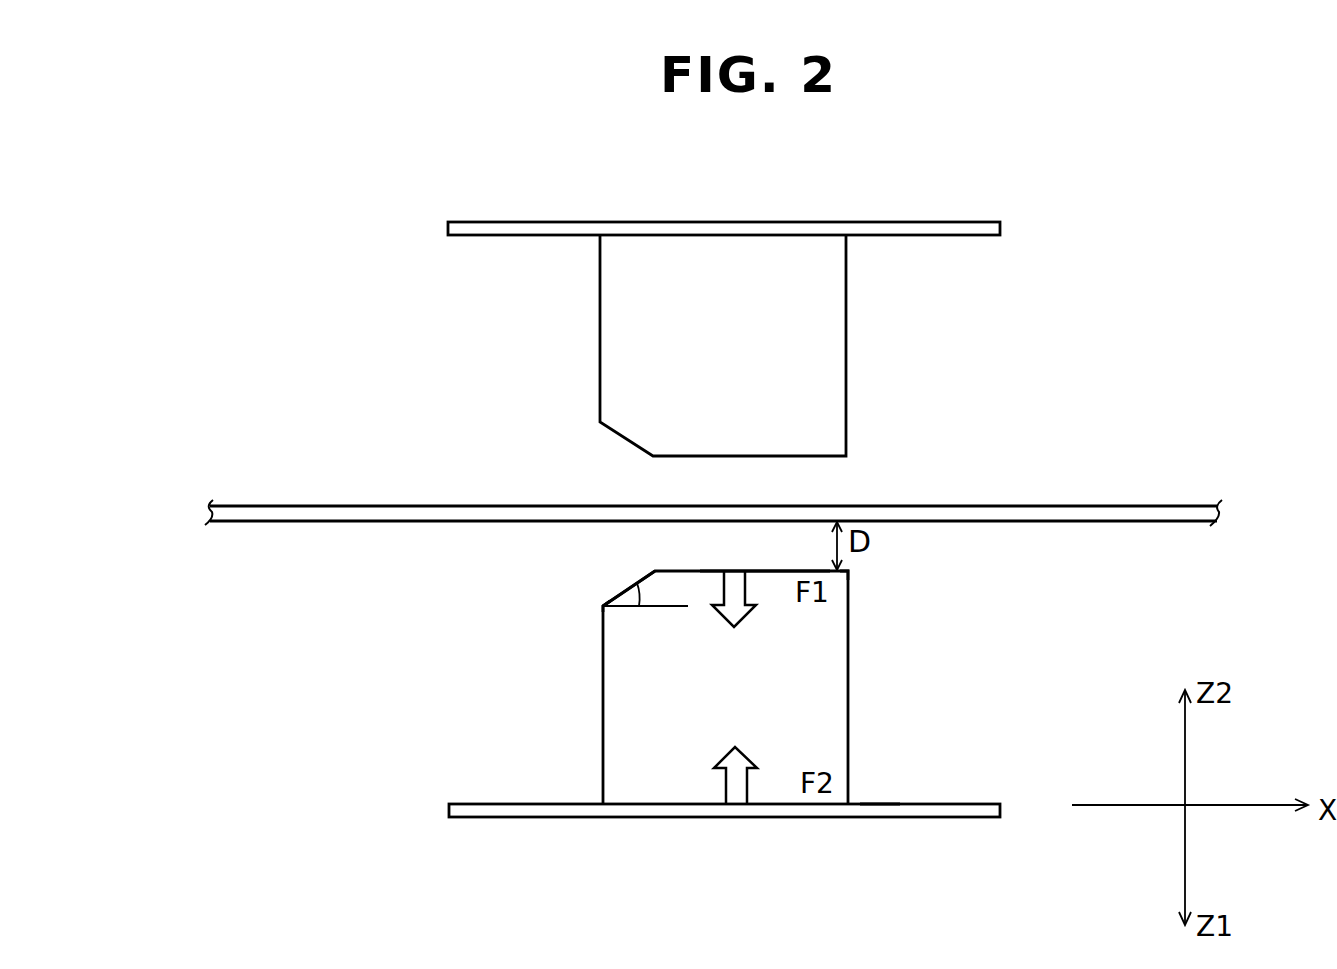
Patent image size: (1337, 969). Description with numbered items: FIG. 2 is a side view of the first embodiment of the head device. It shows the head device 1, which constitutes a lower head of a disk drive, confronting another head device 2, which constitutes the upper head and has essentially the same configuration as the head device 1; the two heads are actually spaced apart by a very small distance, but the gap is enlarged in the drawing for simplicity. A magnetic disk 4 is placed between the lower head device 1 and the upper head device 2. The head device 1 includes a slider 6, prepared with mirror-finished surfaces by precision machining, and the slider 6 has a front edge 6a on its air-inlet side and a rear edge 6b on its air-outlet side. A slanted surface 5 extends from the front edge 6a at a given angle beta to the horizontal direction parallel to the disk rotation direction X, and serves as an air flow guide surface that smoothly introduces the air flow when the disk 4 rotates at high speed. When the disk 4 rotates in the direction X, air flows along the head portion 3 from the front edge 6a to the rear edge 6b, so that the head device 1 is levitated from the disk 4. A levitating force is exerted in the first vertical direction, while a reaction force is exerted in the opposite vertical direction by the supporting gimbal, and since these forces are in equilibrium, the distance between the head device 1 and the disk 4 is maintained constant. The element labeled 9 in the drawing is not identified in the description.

The head device 1 is at (592, 706).
The head device 2 is at (596, 338).
The head portion 3 is at (763, 571).
The magnetic disk 4 is at (298, 510).
The slanted surface 5 is at (632, 590).
The slider 6 is at (647, 780).
The front edge 6a is at (603, 606).
The rear edge 6b is at (848, 571).
The upper surface of base plate 9 is at (880, 808).